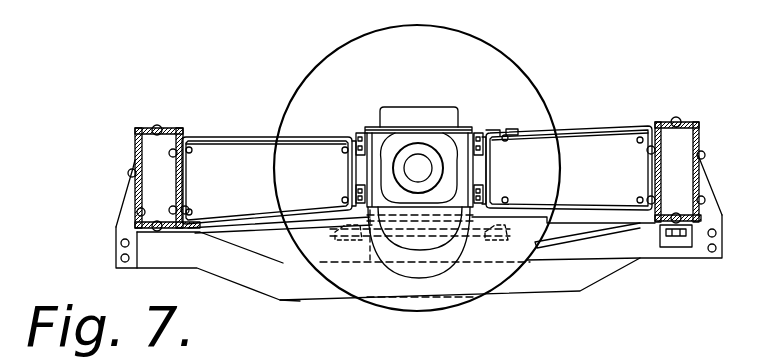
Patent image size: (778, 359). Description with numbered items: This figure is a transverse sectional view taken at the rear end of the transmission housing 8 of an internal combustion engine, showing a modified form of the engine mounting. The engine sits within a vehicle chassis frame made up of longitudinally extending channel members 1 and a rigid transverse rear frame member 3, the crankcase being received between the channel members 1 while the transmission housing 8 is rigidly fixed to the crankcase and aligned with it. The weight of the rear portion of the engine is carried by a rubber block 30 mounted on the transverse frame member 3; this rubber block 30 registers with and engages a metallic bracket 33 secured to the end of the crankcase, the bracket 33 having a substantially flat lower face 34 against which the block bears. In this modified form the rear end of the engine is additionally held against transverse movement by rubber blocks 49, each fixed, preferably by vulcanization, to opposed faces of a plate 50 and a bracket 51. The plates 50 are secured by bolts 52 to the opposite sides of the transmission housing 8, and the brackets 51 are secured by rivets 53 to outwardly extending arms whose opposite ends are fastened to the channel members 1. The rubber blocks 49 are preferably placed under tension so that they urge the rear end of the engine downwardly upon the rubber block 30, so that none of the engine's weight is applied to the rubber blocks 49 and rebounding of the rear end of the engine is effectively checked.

The channel member 1 is at (660, 161).
The rear transverse frame member 3 is at (252, 326).
The transmission housing 8 is at (378, 132).
The rubber block 30 is at (472, 256).
The metallic bracket 33 is at (512, 130).
The flat lower face 34 is at (580, 130).
The rubber block 49 is at (474, 130).
The plate 50 is at (466, 128).
The bracket 51 is at (495, 128).
The bolt 52 is at (357, 132).
The rivet 53 is at (350, 136).